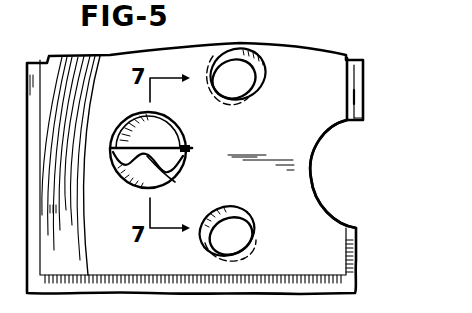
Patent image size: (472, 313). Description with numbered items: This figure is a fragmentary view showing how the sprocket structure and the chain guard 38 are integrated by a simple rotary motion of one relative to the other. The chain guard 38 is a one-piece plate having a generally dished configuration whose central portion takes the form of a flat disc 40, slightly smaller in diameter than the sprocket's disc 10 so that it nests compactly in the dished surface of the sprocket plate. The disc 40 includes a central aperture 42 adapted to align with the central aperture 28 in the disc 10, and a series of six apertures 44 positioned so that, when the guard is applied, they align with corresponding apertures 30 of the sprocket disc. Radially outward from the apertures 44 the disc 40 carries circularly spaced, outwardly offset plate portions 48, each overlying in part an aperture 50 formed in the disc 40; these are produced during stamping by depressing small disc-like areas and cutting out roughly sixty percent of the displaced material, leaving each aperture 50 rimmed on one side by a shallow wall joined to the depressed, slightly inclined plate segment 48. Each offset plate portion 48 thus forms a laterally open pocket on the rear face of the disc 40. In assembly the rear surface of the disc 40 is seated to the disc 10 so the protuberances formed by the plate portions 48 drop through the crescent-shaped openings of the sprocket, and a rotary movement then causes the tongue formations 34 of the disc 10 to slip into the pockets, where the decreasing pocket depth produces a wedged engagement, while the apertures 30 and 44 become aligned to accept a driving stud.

The disc 10 is at (364, 82).
The central aperture 28 is at (358, 123).
The circularly spaced apertures 30 is at (240, 118).
The tongue-like formation 34 is at (172, 174).
The chain guard 38 is at (288, 46).
The disc 40 is at (318, 93).
The central aperture 42 is at (314, 166).
The apertures 44 is at (263, 78).
The outwardly offset plate portion 48 is at (131, 125).
The aperture 50 is at (188, 146).